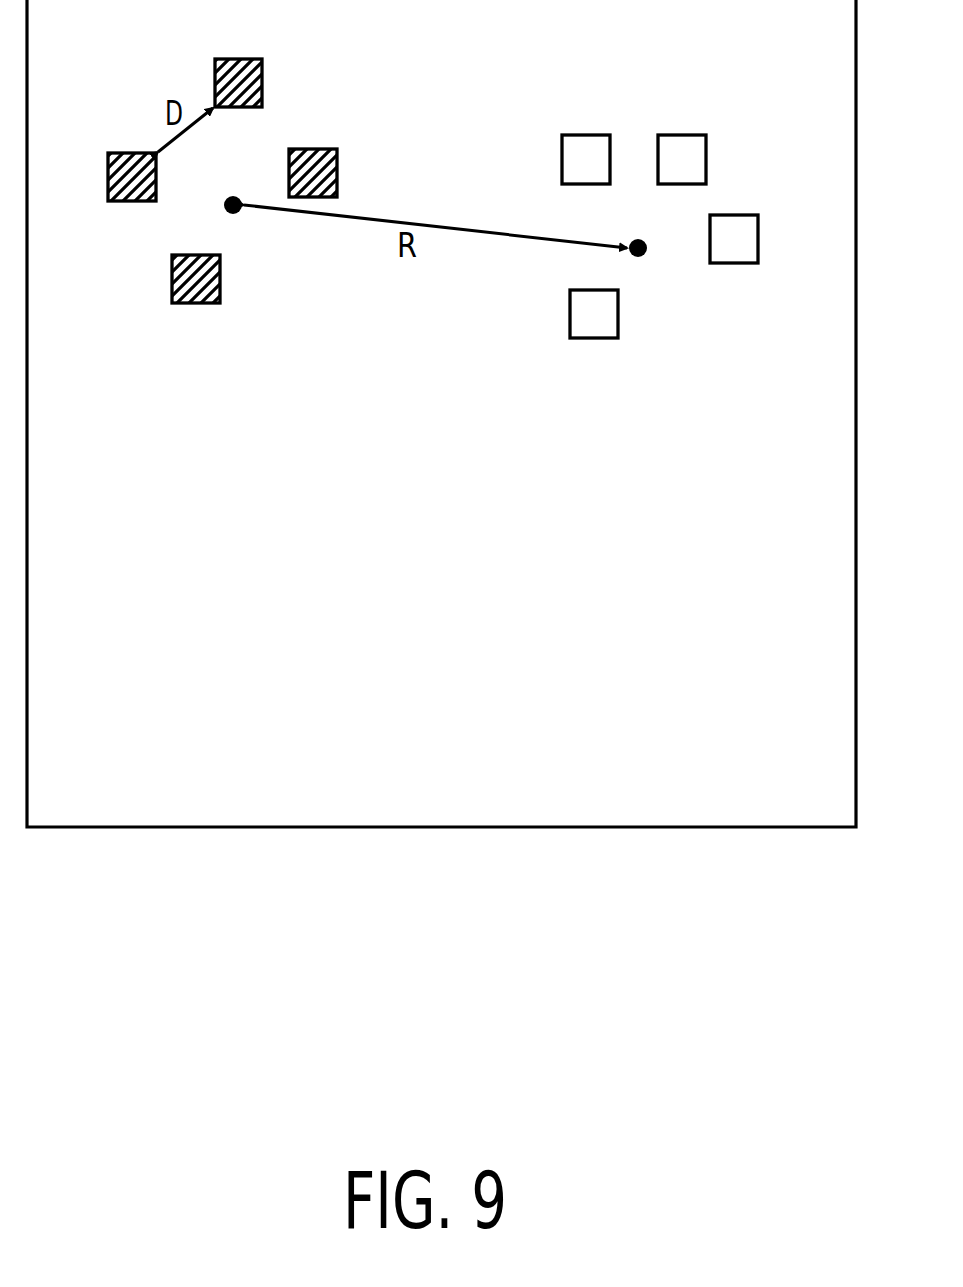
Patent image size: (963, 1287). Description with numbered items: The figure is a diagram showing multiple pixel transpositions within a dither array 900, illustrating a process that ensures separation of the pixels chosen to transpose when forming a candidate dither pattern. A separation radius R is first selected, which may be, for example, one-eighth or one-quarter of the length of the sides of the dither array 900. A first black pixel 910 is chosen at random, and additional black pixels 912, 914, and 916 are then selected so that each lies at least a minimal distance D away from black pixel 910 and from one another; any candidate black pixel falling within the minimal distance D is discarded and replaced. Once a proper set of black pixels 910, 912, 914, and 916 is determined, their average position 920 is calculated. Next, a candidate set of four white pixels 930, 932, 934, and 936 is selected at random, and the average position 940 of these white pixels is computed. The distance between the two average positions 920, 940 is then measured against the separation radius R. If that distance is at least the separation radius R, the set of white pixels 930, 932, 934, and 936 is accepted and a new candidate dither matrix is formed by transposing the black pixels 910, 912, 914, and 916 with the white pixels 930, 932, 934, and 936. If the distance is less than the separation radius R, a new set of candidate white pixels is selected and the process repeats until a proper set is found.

The dither array 900 is at (160, 828).
The first black pixel 910 is at (130, 153).
The additional black pixel 912 is at (215, 60).
The additional black pixel 914 is at (315, 148).
The additional black pixel 916 is at (196, 304).
The average position 920 is at (237, 212).
The white pixel 930 is at (592, 338).
The white pixel 932 is at (738, 263).
The white pixel 934 is at (690, 135).
The white pixel 936 is at (583, 135).
The average position 940 is at (646, 256).